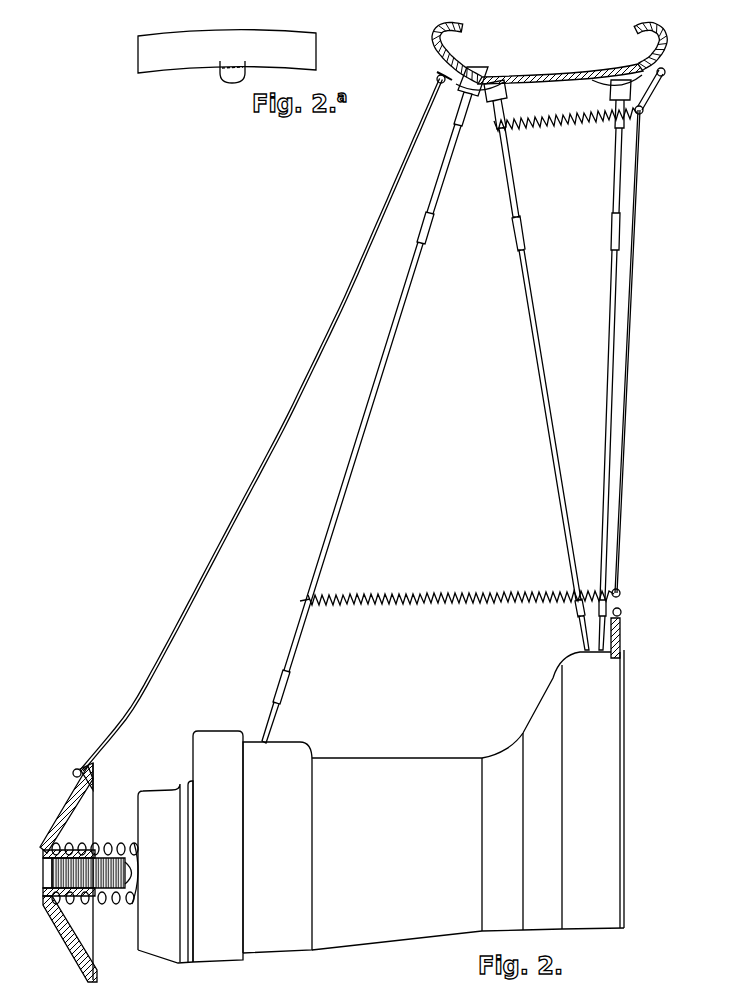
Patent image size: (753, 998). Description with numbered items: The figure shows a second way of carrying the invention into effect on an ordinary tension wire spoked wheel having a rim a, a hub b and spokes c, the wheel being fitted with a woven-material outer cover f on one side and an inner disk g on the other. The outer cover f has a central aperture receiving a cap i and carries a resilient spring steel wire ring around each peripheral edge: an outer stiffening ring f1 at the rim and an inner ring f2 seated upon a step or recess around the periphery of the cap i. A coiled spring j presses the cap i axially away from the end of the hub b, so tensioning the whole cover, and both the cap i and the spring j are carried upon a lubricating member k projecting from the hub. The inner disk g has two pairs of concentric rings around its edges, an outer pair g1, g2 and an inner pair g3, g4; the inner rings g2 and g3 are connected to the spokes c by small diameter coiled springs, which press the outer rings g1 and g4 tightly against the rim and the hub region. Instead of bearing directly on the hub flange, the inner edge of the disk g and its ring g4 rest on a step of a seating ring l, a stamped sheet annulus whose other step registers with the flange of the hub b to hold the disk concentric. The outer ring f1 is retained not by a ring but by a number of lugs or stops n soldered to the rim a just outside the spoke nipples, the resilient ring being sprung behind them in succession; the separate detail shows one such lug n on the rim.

In FIG. 2, the rim a is at (538, 77).
In FIG. 2, the hub b is at (381, 806).
In FIG. 2, the spokes c is at (398, 322).
In FIG. 2, the outer cover f is at (330, 326).
In FIG. 2, the outer stiffening ring f1 is at (437, 83).
In FIG. 2, the inner wire ring f2 is at (75, 770).
In FIG. 2, the inner disk g is at (628, 293).
In FIG. 2, the outer ring g1 is at (668, 72).
In FIG. 2, the inner ring g2 is at (646, 110).
In FIG. 2, the inner ring g3 is at (622, 590).
In FIG. 2, the outer ring g4 is at (624, 612).
In FIG. 2, the cap i is at (50, 829).
In FIG. 2, the coiled spring j is at (96, 845).
In FIG. 2, the lubricating member k is at (100, 898).
In FIG. 2, the seating ring l is at (619, 632).
In FIG. 2A, the lugs or stops n is at (230, 72).
In FIG. 2, the lugs or stops n is at (437, 72).